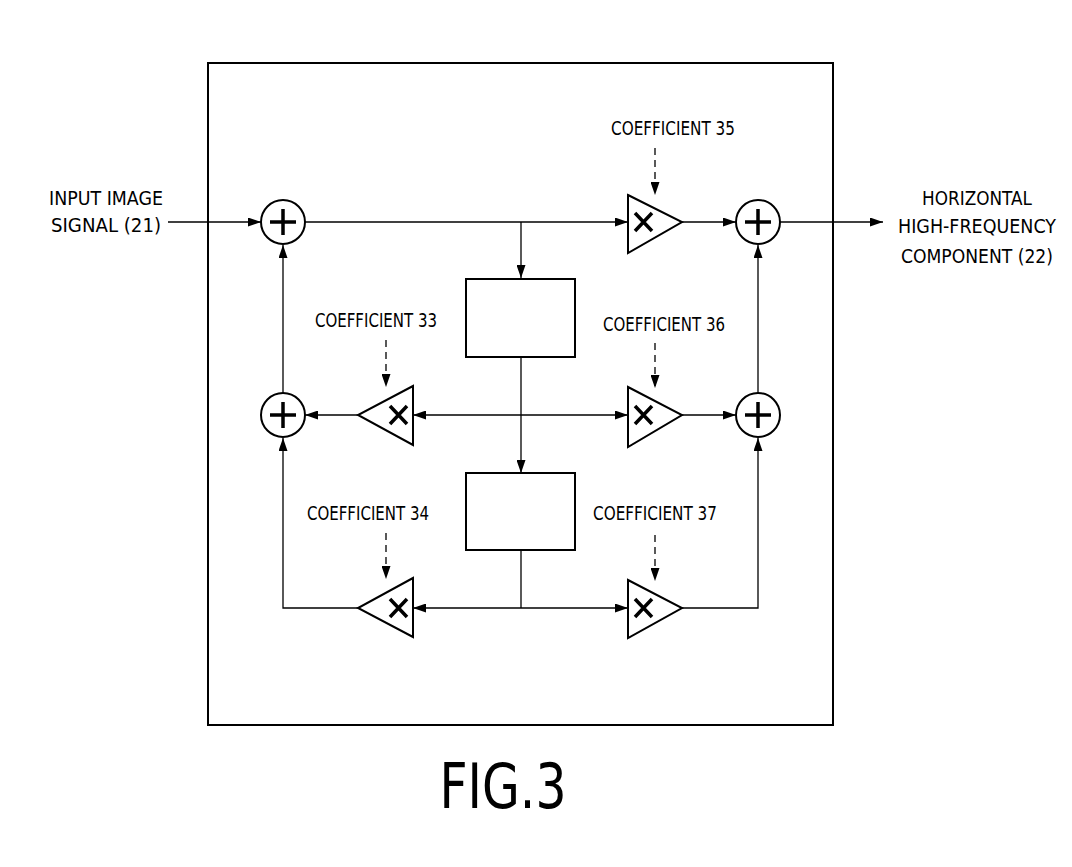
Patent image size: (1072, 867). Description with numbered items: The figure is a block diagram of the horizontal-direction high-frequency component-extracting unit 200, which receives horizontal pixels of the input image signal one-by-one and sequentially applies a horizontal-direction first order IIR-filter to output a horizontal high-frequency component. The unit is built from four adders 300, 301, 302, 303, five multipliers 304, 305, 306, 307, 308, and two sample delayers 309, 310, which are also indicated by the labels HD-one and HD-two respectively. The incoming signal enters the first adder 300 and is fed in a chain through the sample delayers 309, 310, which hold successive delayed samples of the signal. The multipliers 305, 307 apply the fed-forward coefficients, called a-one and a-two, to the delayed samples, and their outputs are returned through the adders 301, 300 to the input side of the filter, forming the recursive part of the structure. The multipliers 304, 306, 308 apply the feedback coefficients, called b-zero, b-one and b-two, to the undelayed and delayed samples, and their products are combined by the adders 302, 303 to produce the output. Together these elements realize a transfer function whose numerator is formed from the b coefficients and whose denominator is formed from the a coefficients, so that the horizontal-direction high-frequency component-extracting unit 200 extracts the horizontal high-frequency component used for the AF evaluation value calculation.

The horizontal-direction high-frequency component-extracting unit 200 is at (546, 62).
The adder 300 is at (271, 200).
The adder 301 is at (271, 393).
The adder 302 is at (768, 202).
The adder 303 is at (770, 395).
The multiplier 304 is at (668, 210).
The multiplier 305 is at (378, 404).
The multiplier 306 is at (668, 408).
The multiplier 307 is at (378, 597).
The multiplier 308 is at (668, 596).
The sample delayer 309 is at (545, 278).
The sample delayer 310 is at (546, 472).